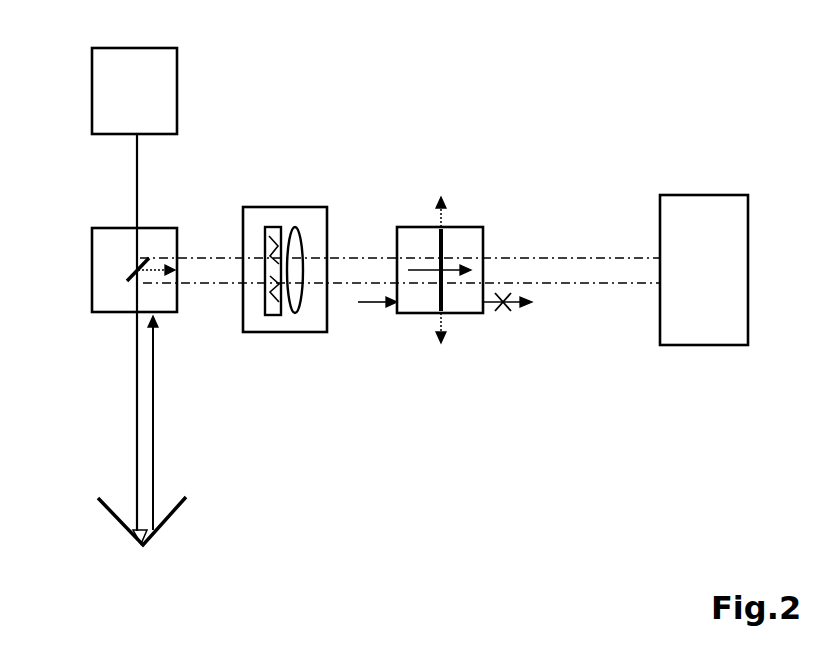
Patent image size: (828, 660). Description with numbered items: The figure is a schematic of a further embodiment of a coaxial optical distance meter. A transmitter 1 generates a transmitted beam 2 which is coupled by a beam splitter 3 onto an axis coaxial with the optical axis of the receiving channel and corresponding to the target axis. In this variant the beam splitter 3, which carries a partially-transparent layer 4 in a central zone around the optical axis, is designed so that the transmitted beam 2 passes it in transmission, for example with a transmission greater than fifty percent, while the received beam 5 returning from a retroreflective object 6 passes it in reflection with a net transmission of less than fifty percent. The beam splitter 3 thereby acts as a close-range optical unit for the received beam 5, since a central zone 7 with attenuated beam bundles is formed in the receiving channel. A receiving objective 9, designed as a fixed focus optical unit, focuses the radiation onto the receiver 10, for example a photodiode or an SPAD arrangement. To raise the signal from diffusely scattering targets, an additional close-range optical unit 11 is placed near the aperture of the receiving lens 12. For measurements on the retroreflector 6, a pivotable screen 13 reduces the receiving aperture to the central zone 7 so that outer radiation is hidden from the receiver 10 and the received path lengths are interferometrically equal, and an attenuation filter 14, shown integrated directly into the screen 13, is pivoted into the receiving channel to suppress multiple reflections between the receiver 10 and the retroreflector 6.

The transmitter 1 is at (107, 74).
The transmitted beam 2 is at (95, 339).
The beam splitter 3 is at (171, 233).
The partially-transparent layer 4 is at (87, 226).
The received beam 5 is at (191, 423).
The retroreflective object 6 is at (114, 539).
The central zone 7 is at (405, 199).
The receiving objective 9 is at (318, 232).
The receiver 10 is at (742, 238).
The close-range optical unit 11 is at (239, 306).
The receiving lens 12 is at (329, 305).
The screen 13 is at (450, 255).
The attenuation filter 14 is at (506, 301).